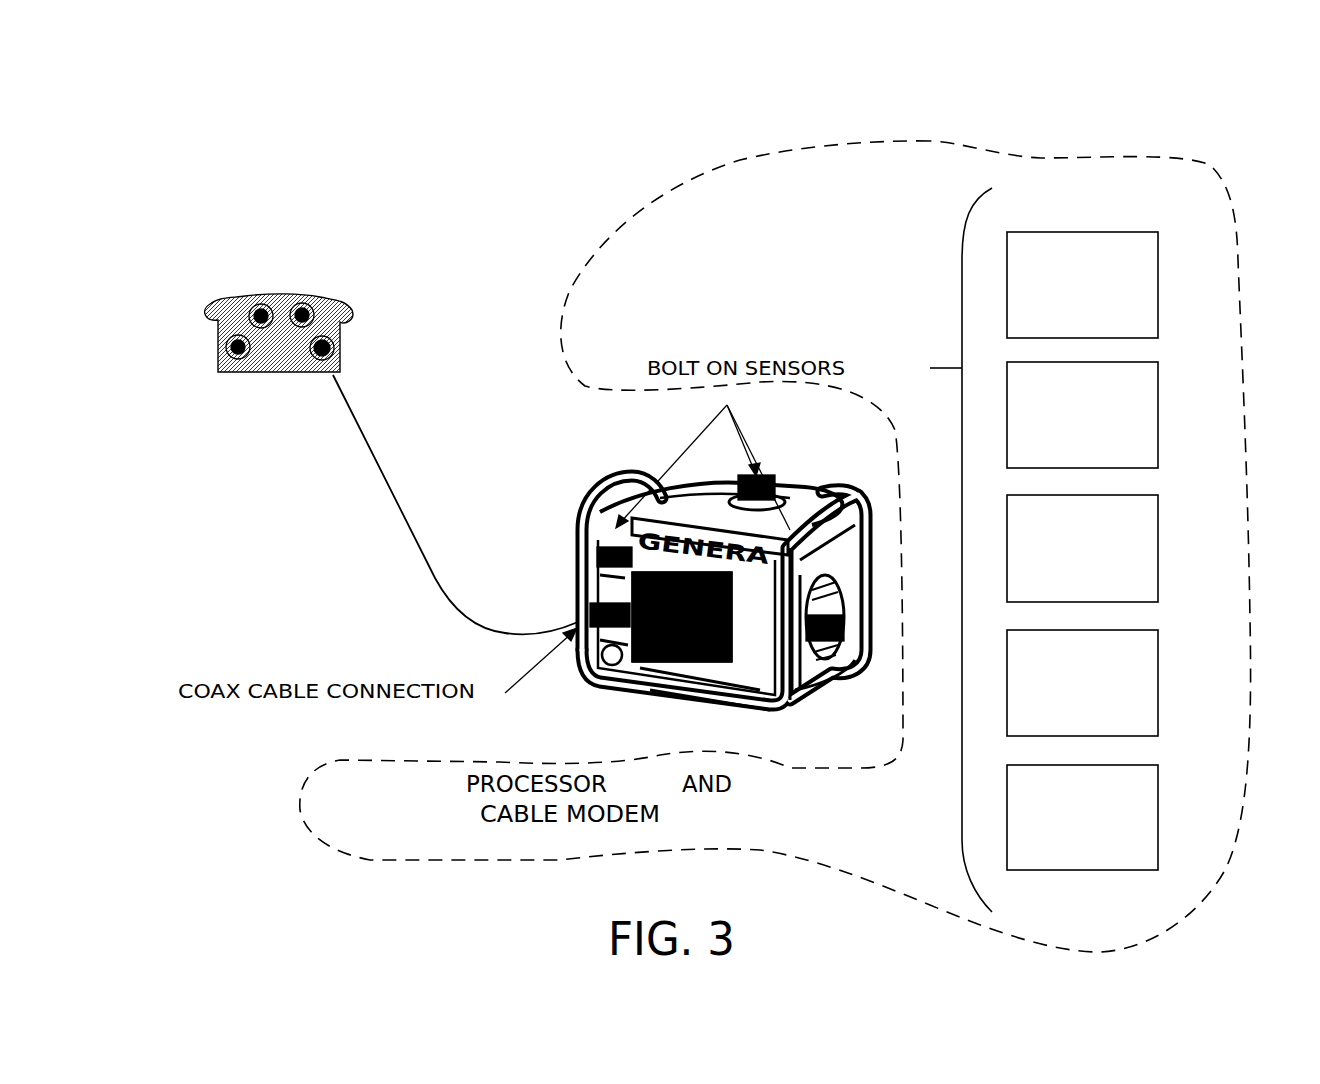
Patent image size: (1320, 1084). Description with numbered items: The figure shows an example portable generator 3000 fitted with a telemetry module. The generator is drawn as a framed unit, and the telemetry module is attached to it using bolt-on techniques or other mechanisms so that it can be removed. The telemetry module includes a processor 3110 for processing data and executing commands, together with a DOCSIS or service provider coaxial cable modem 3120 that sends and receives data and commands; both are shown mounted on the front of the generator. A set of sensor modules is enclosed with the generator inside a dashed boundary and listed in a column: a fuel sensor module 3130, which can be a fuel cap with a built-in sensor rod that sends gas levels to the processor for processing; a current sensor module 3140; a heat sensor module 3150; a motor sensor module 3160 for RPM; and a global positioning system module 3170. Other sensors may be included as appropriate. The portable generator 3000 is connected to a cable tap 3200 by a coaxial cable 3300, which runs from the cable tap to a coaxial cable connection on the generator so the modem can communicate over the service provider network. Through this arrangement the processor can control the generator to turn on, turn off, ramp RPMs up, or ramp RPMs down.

The portable generator 3000 is at (1172, 132).
The processor 3110 is at (648, 688).
The service provider coaxial cable modem 3120 is at (720, 826).
The fuel sensor module 3130 is at (1222, 297).
The current sensor module 3140 is at (1220, 427).
The heat sensor module 3150 is at (1220, 559).
The motor sensor module 3160 is at (1220, 694).
The global positioning system module 3170 is at (1220, 831).
The cable tap 3200 is at (161, 356).
The coaxial cable 3300 is at (392, 519).